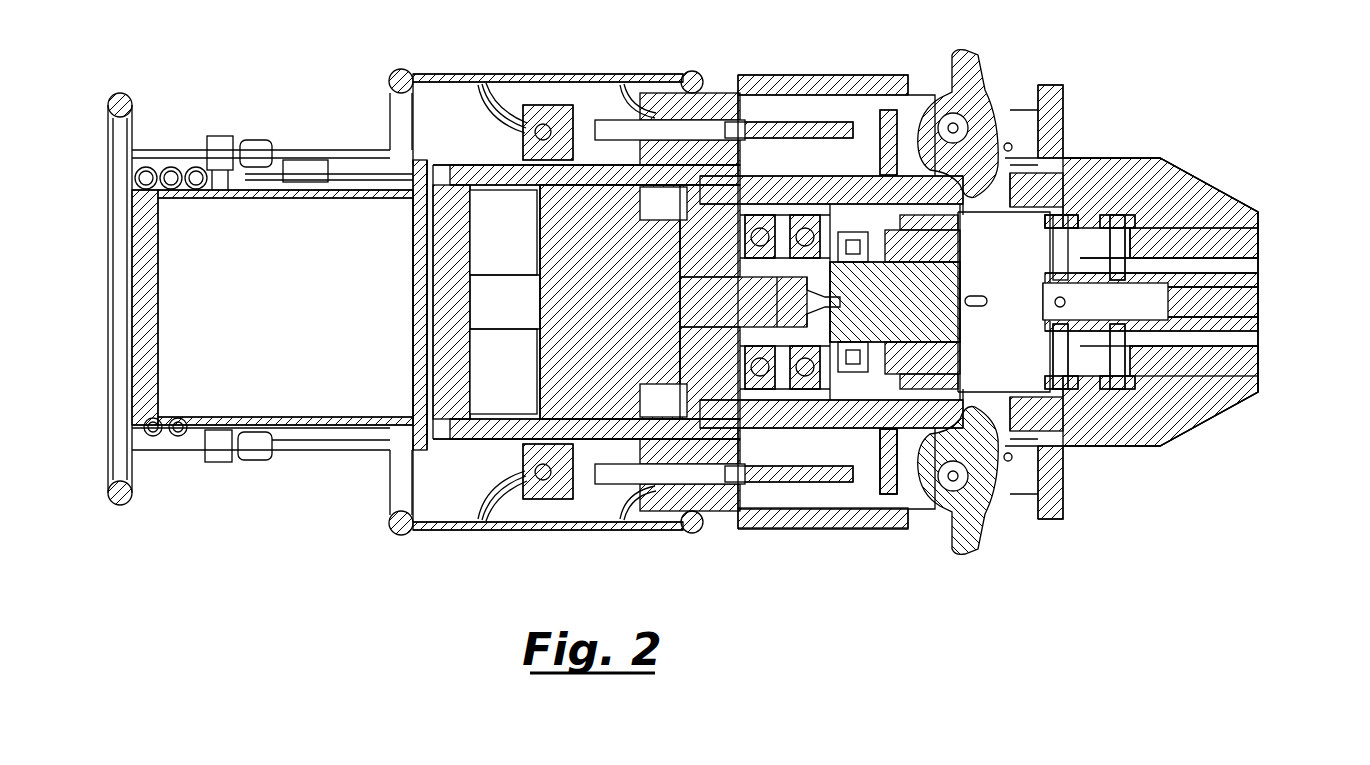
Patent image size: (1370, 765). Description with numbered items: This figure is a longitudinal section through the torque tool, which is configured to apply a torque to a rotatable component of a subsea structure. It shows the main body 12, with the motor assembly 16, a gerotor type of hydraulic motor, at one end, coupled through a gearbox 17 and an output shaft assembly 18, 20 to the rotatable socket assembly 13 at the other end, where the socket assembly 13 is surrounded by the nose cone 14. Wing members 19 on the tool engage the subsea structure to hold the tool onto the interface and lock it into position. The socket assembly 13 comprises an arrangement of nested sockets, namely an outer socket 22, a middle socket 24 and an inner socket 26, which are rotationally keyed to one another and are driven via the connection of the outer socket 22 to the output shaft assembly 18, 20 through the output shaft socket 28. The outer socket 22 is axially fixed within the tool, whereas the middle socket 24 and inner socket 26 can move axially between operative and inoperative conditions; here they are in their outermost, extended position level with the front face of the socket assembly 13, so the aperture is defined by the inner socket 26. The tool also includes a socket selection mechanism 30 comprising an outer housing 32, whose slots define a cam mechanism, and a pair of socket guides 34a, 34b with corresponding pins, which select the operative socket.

The main body 12 is at (562, 165).
The socket assembly 13 is at (1284, 296).
The nose cone 14 is at (1235, 218).
The motor assembly 16 is at (283, 378).
The gearbox 17 is at (612, 230).
The output shaft assembly 18 is at (707, 313).
The wing members 19 is at (976, 95).
The output shaft assembly 20 is at (825, 337).
The outer socket 22 is at (1237, 243).
The middle socket 24 is at (1240, 267).
The inner socket 26 is at (1230, 290).
The output shaft socket 28 is at (880, 340).
The socket selection mechanism 30 is at (1083, 373).
The outer housing 32 is at (1043, 207).
The socket guide 34a is at (1132, 387).
The socket guide 34b is at (1118, 212).